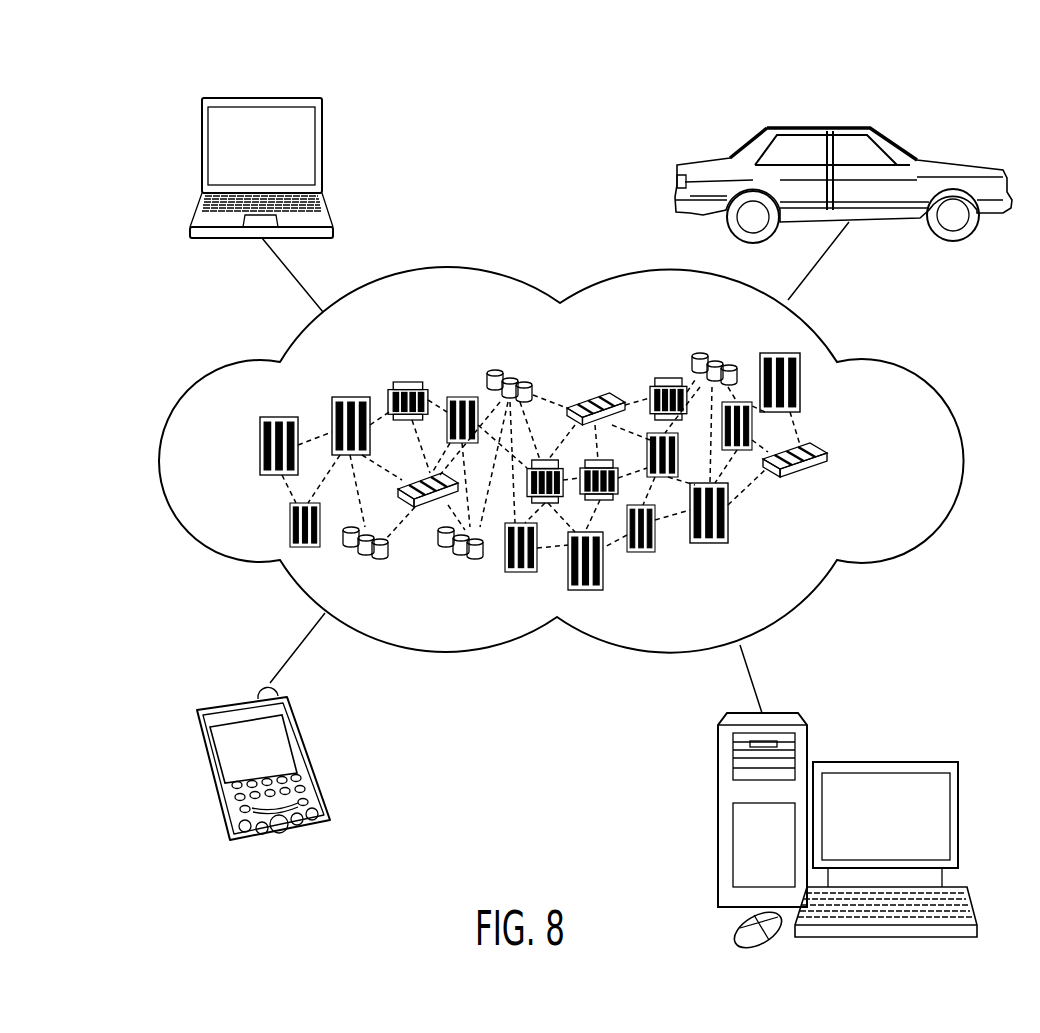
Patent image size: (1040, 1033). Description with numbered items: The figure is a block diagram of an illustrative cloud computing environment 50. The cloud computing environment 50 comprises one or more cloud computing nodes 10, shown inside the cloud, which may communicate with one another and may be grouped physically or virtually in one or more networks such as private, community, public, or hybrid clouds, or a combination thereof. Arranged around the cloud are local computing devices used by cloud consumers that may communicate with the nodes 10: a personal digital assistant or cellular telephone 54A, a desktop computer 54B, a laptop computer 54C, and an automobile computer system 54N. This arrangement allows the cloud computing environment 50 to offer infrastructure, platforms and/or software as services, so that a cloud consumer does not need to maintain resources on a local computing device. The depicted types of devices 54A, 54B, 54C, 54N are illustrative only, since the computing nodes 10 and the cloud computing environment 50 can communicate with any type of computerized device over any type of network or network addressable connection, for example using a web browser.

The cloud computing node 10 is at (833, 460).
The cloud computing environment 50 is at (898, 368).
The personal digital assistant or cellular telephone 54A is at (240, 700).
The desktop computer 54B is at (885, 760).
The laptop computer 54C is at (262, 97).
The automobile computer system 54N is at (822, 127).